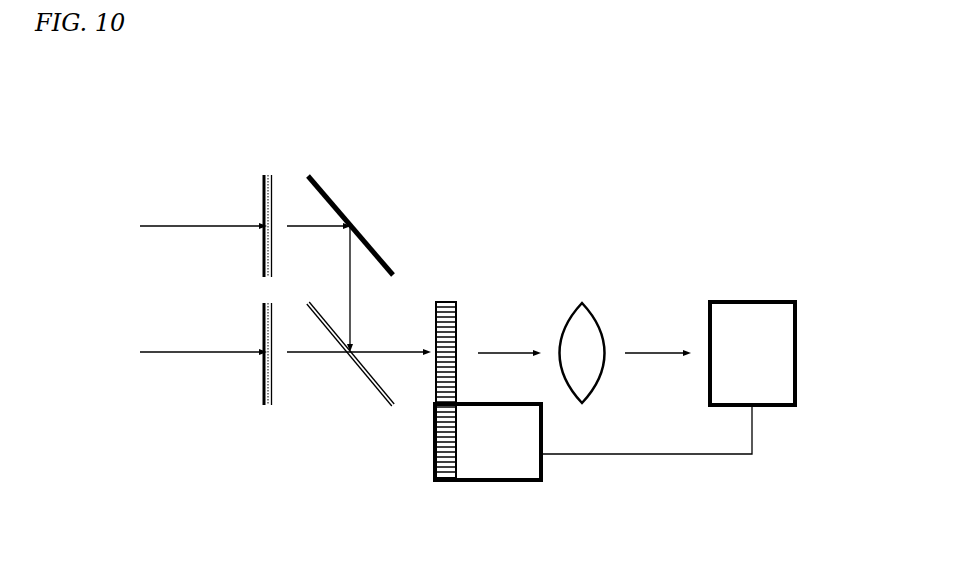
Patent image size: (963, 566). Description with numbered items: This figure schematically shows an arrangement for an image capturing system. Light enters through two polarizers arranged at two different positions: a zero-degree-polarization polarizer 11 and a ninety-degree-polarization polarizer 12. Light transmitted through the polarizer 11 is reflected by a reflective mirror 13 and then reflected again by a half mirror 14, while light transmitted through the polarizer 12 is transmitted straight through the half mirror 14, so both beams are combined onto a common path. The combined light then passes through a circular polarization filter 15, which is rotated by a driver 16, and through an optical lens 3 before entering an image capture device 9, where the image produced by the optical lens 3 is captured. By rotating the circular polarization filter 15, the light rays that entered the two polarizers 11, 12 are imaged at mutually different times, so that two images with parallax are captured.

The 0-degree-polarization polarizer 11 is at (263, 173).
The 90-degree-polarization polarizer 12 is at (263, 405).
The reflective mirror 13 is at (330, 195).
The half mirror 14 is at (372, 378).
The circular polarization filter 15 is at (457, 300).
The driver 16 is at (520, 453).
The optical lens 3 is at (583, 328).
The image capture device 9 is at (752, 328).